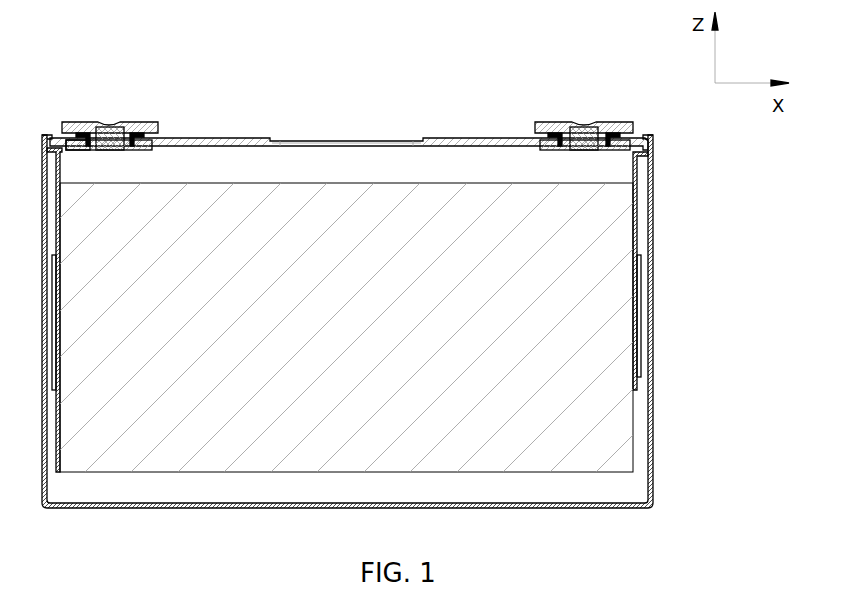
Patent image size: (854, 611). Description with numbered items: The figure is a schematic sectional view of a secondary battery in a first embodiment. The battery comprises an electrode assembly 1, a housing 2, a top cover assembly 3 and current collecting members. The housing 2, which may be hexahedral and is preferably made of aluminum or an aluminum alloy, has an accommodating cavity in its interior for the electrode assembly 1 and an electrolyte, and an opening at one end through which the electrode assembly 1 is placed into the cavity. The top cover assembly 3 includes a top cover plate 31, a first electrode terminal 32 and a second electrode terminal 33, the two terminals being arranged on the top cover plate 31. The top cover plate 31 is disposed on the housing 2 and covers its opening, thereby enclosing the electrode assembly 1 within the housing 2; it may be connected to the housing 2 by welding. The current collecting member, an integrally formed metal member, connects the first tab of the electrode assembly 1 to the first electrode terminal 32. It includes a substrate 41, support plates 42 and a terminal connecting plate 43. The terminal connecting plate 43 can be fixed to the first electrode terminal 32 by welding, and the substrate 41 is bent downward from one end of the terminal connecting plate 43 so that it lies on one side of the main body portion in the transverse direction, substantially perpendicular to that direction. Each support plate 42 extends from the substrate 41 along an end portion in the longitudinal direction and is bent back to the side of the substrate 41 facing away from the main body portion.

The electrode assembly 1 is at (336, 473).
The housing 2 is at (655, 292).
The top cover assembly 3 is at (373, 85).
The top cover plate 31 is at (236, 138).
The first electrode terminal 32 is at (123, 122).
The second electrode terminal 33 is at (576, 122).
The substrate 41 is at (57, 203).
The support plate 42 is at (54, 281).
The terminal connecting plate 43 is at (82, 148).